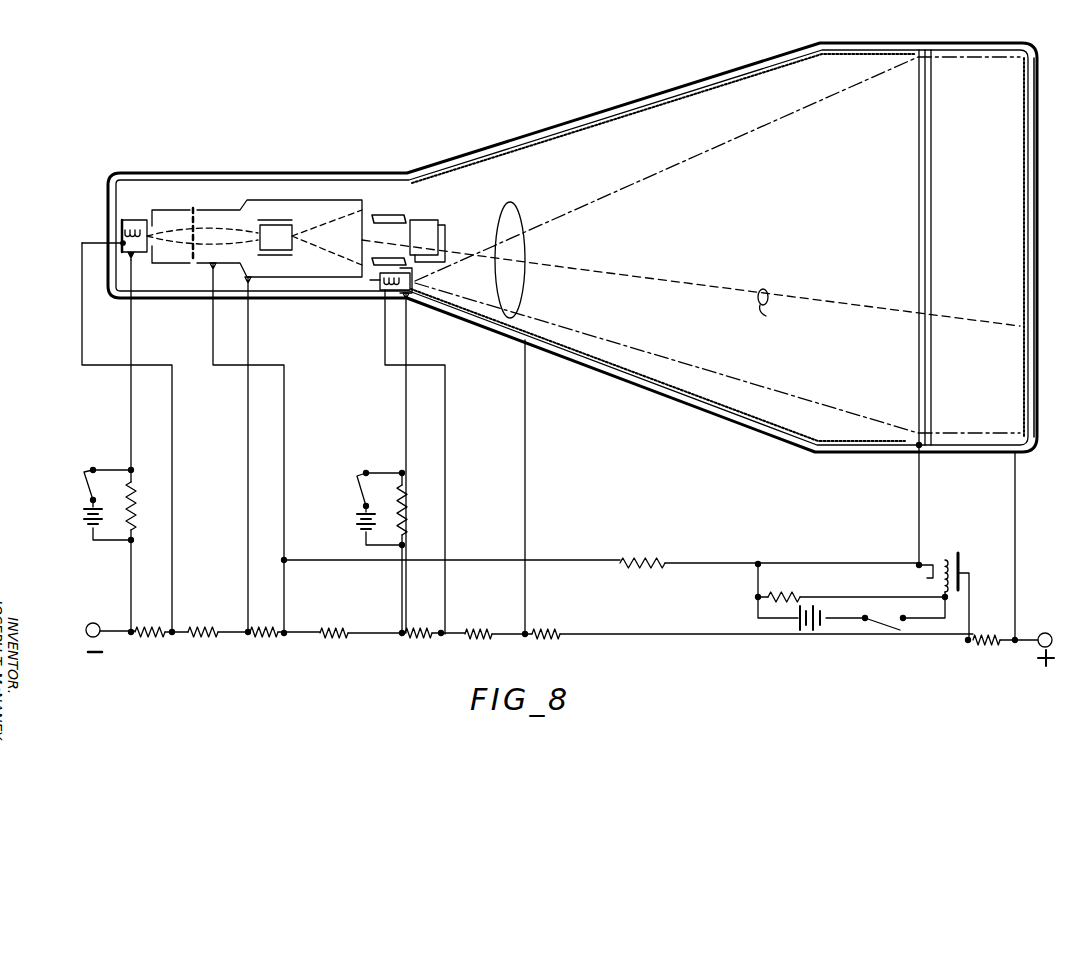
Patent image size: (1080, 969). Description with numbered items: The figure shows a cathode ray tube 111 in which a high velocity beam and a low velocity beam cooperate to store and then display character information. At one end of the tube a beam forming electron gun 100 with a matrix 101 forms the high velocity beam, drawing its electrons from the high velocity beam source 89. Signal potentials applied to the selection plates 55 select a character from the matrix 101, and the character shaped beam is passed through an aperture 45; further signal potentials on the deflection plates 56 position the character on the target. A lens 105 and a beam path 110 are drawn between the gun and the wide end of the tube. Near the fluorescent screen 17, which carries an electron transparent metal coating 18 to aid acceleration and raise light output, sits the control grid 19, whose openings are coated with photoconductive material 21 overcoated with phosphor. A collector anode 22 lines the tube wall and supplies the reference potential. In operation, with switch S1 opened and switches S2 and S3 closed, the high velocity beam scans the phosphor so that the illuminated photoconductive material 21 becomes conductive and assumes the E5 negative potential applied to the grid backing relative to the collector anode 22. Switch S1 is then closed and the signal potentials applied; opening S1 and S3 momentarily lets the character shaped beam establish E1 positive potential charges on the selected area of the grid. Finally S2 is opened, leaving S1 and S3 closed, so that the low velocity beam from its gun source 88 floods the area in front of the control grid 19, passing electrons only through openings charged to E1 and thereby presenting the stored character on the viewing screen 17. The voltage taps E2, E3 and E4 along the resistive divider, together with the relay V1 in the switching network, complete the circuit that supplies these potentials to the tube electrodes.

The cathode ray tube 111 is at (597, 113).
The collector anode 22 is at (833, 442).
The fluorescent screen 17 is at (1028, 230).
The electron transparent metal coating 18 is at (1018, 250).
The control grid 19 is at (930, 217).
The photoconductive material 21 is at (918, 222).
The beam forming electron gun 100 is at (186, 288).
The matrix 101 is at (193, 211).
The high velocity beam source 89 is at (143, 218).
The selection plates 55 is at (278, 219).
The aperture 45 is at (362, 240).
The deflection plates 56 is at (408, 216).
The low velocity gun source 88 is at (382, 295).
The electron lens 105 is at (510, 206).
The beam path 110 is at (777, 309).
The E1 positive potential E1 is at (968, 643).
The voltage tap E2 is at (525, 637).
The voltage tap E3 is at (441, 636).
The voltage tap E4 is at (402, 636).
The E5 negative potential E5 is at (284, 636).
The switch S1 is at (101, 550).
The switch S2 is at (371, 552).
The switch S3 is at (852, 597).
The relay V1 is at (957, 592).